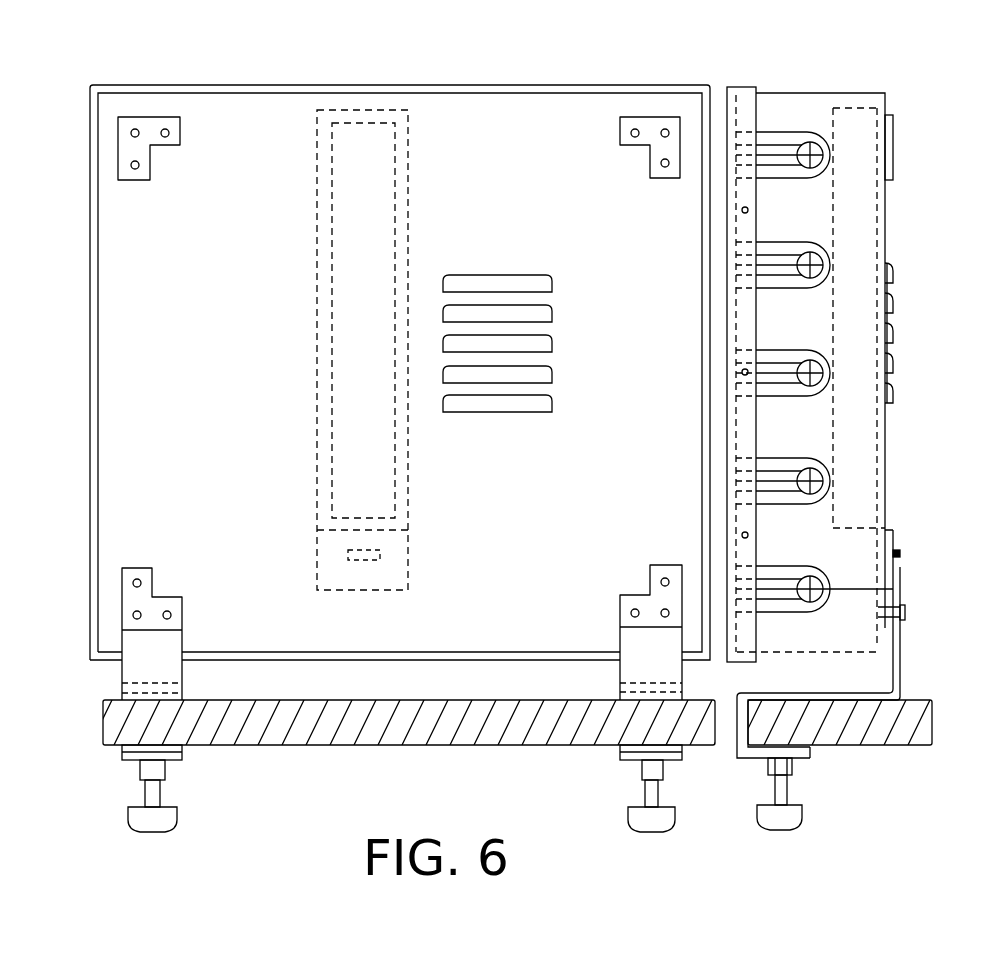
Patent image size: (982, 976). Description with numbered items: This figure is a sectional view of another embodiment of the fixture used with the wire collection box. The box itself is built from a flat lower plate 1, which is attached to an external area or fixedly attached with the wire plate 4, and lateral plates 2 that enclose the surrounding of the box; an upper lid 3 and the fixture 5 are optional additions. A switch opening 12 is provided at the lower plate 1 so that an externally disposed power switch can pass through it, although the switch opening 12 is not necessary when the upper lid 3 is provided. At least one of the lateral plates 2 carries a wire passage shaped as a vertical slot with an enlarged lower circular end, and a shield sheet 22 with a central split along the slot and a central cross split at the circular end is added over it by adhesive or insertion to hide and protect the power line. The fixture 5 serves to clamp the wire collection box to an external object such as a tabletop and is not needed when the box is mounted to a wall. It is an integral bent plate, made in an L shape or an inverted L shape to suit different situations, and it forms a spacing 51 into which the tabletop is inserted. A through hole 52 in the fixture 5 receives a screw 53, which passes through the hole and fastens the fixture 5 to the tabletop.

The lower plate 1 is at (607, 82).
The lateral plate 2 is at (835, 91).
The upper lid 3 is at (742, 88).
The wire plate 4 is at (366, 106).
The fixture 5 is at (818, 758).
The switch opening 12 is at (887, 182).
The shield sheet 22 is at (784, 141).
The spacing 51 is at (748, 727).
The through hole 52 is at (803, 762).
The screw 53 is at (778, 820).